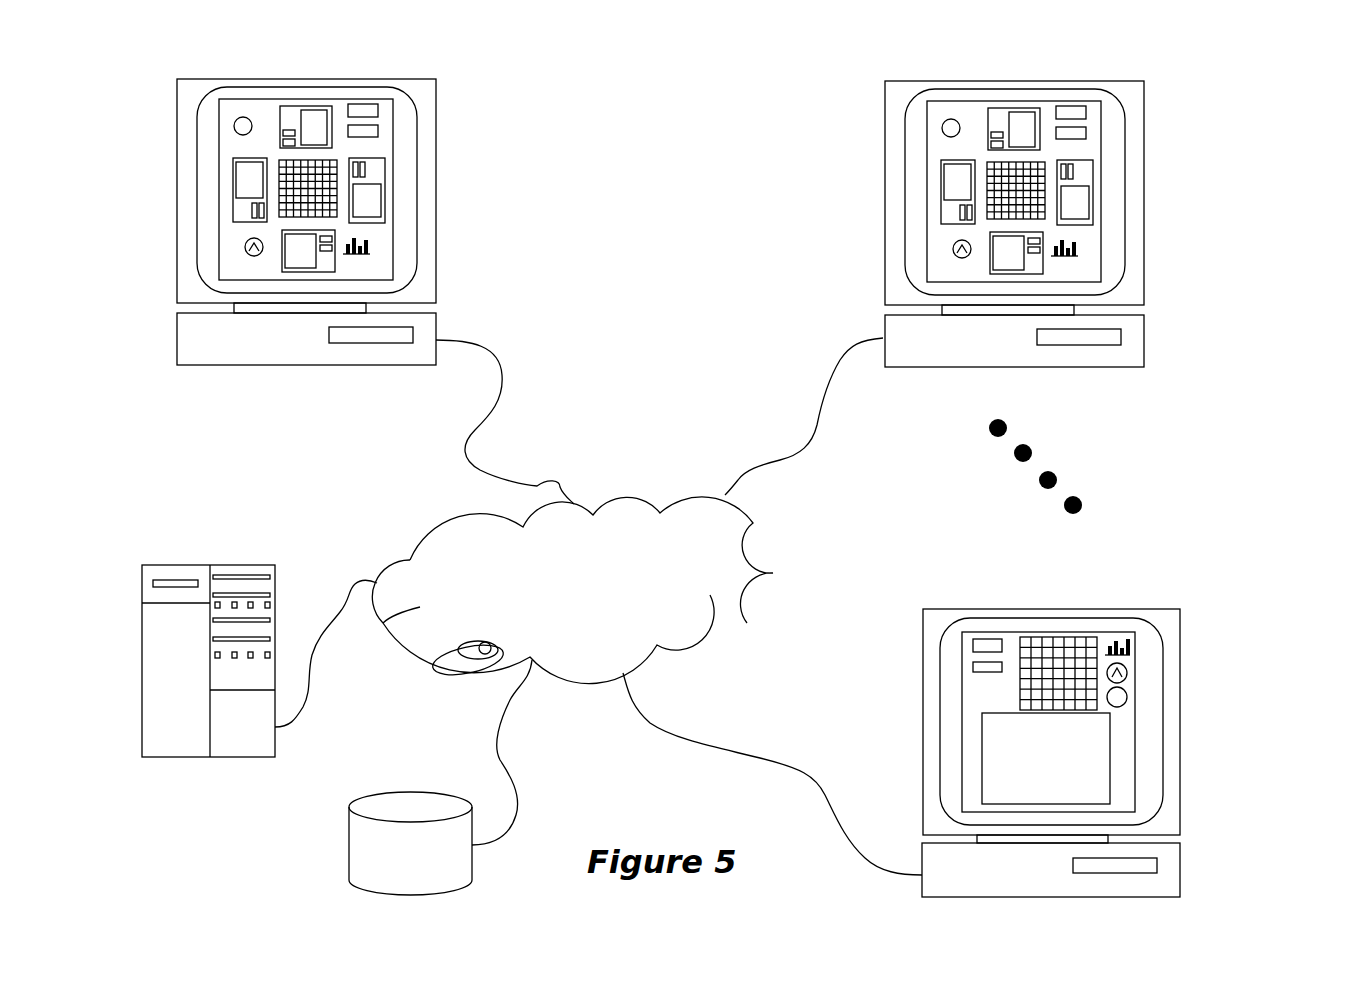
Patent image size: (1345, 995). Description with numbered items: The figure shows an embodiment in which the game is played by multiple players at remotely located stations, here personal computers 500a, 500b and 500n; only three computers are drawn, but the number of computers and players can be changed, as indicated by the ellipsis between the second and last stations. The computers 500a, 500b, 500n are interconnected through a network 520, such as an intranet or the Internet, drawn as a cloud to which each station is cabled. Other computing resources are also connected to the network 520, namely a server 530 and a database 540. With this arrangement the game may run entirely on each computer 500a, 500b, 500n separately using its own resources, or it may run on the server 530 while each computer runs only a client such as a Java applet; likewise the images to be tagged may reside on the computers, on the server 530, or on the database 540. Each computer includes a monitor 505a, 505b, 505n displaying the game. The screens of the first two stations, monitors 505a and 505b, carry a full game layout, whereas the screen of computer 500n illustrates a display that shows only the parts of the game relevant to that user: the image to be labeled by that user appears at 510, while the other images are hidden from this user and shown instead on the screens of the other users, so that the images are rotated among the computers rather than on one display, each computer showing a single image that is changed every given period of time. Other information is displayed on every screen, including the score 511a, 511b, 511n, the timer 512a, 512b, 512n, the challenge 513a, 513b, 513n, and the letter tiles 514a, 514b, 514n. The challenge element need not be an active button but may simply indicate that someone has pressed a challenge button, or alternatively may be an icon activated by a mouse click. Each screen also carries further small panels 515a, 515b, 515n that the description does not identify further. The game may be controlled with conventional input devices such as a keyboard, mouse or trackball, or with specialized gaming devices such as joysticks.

The personal computer 500a is at (475, 92).
The personal computer 500b is at (1023, 203).
The personal computer 500n is at (1202, 562).
The monitor 505a is at (212, 88).
The monitor 505b is at (1023, 167).
The monitor 505n is at (942, 650).
The image to be labeled 510 is at (1073, 772).
The score 511a is at (367, 250).
The score 511b is at (1158, 234).
The score 511n is at (1126, 640).
The timer 512a is at (246, 249).
The timer 512b is at (884, 239).
The timer 512n is at (1125, 667).
The challenge 513a is at (235, 121).
The challenge 513b is at (870, 117).
The challenge 513n is at (1125, 691).
The letter tiles 514a is at (333, 162).
The letter tiles 514b is at (1112, 174).
The letter tiles 514n is at (1058, 637).
The button icons a 515a is at (362, 108).
The button icons b 515b is at (1106, 89).
The button icons n 515n is at (985, 639).
The network 520 is at (623, 590).
The server 530 is at (197, 677).
The database 540 is at (431, 872).